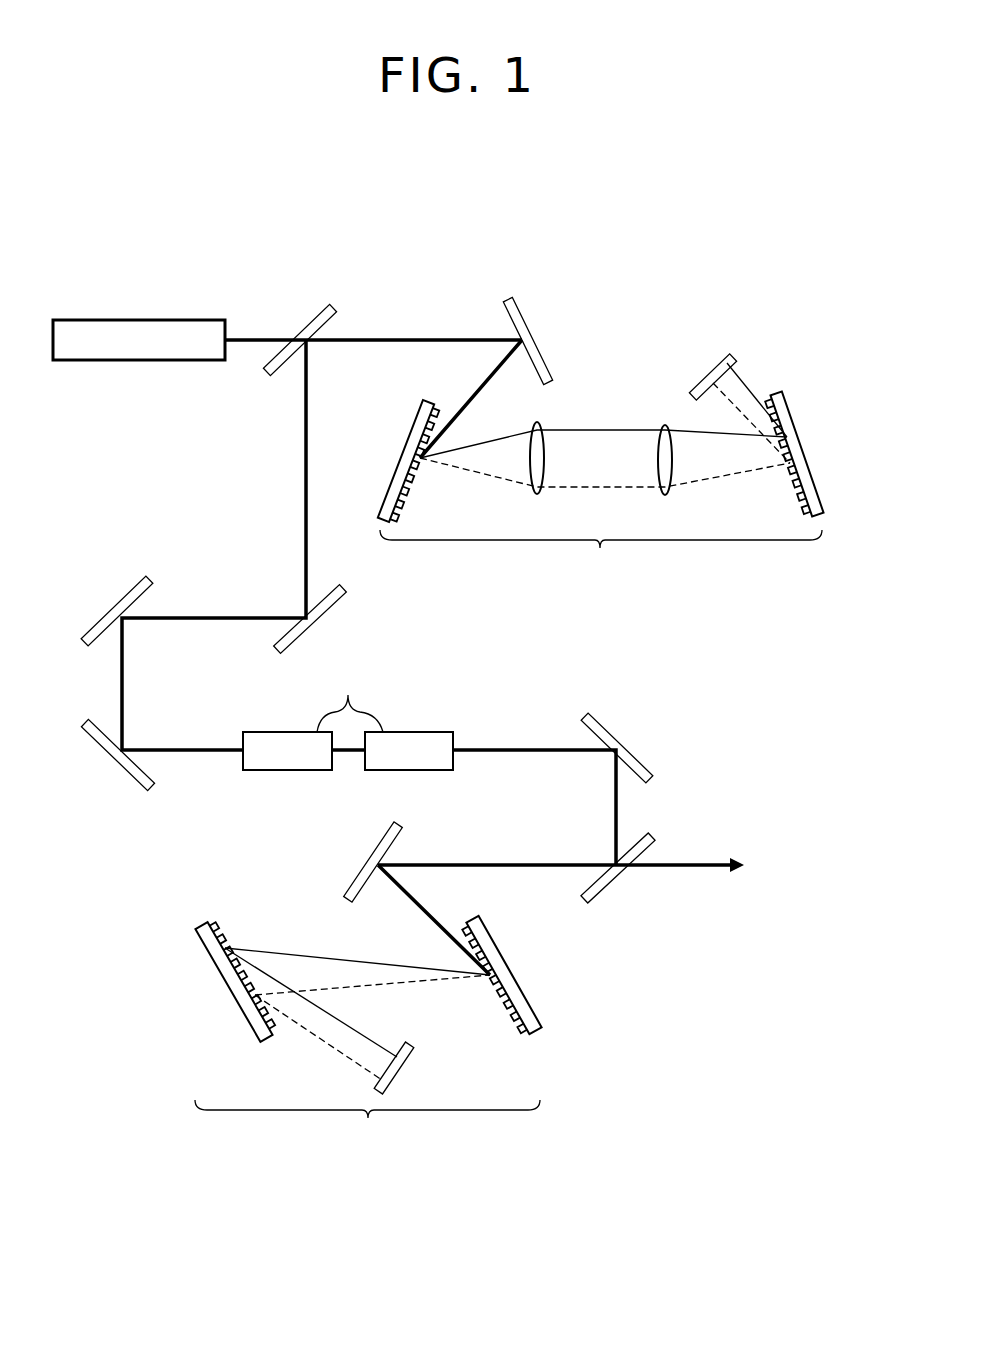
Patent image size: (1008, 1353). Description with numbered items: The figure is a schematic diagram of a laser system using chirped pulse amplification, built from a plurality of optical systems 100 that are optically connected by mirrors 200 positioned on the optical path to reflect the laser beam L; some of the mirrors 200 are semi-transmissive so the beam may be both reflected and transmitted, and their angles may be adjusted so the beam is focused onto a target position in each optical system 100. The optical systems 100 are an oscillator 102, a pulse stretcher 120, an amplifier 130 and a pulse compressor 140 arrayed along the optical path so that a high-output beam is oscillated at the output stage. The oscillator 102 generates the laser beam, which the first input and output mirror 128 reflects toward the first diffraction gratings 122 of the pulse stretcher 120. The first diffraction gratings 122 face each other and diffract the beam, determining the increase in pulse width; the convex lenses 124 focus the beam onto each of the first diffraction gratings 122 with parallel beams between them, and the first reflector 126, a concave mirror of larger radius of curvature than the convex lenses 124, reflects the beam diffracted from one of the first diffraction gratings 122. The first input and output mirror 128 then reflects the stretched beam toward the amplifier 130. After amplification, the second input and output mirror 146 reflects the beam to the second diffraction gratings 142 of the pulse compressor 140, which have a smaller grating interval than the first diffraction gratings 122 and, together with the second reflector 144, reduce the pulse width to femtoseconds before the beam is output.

The optical systems 100 is at (303, 478).
The oscillator 102 is at (176, 320).
The pulse stretcher 120 is at (606, 438).
The first diffraction gratings 122 is at (410, 437).
The convex lenses 124 is at (663, 423).
The first reflector 126 is at (722, 356).
The first input and output mirror 128 is at (526, 326).
The amplifier 130 is at (348, 720).
The pulse compressor 140 is at (367, 1032).
The second diffraction gratings 142 is at (222, 978).
The second reflector 144 is at (400, 1068).
The second input and output mirror 146 is at (372, 852).
The mirrors 200 is at (316, 306).